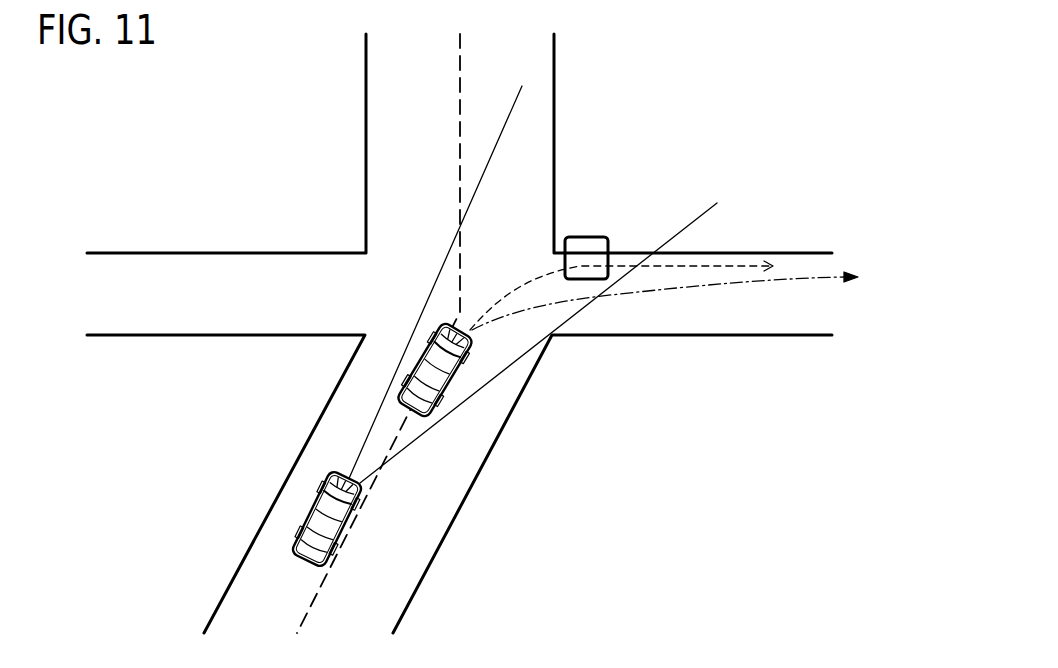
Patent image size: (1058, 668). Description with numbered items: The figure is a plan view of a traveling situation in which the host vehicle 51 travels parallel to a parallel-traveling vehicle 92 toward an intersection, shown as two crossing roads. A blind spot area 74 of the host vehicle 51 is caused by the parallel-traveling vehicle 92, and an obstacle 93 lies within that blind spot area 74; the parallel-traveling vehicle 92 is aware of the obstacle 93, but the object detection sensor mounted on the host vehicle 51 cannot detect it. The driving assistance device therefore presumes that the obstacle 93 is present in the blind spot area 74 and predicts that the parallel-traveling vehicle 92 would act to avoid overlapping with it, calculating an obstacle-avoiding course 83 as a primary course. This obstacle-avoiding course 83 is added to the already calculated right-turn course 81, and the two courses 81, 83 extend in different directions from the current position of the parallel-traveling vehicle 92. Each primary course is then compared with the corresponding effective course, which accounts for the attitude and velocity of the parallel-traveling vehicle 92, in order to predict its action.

The blind spot area 74 is at (512, 112).
The right-turn course 81 is at (733, 266).
The obstacle-avoiding course 83 is at (648, 292).
The obstacle 93 is at (592, 237).
The parallel-traveling vehicle 92 is at (403, 397).
The host vehicle 51 is at (299, 546).